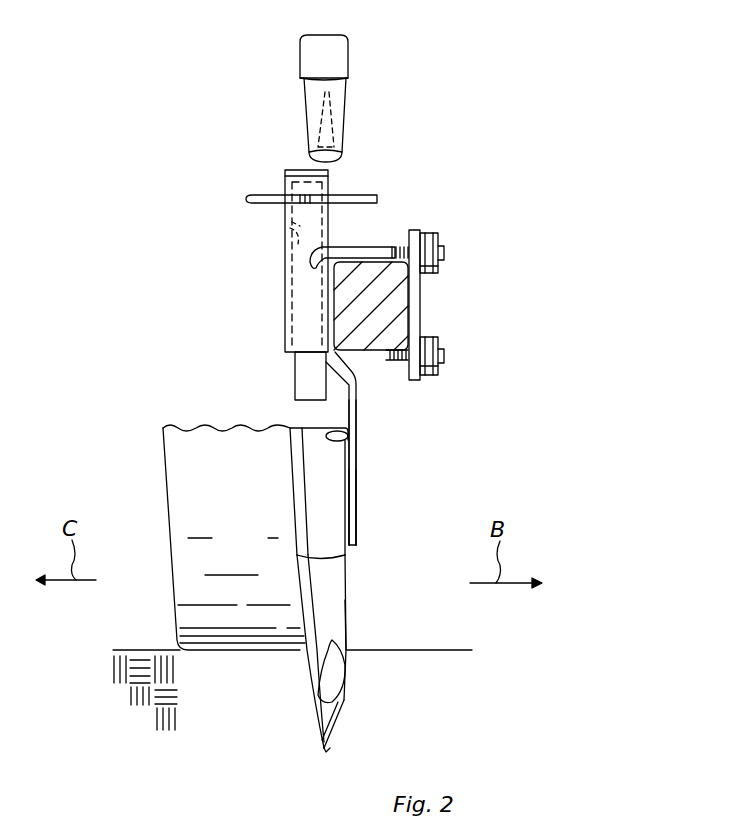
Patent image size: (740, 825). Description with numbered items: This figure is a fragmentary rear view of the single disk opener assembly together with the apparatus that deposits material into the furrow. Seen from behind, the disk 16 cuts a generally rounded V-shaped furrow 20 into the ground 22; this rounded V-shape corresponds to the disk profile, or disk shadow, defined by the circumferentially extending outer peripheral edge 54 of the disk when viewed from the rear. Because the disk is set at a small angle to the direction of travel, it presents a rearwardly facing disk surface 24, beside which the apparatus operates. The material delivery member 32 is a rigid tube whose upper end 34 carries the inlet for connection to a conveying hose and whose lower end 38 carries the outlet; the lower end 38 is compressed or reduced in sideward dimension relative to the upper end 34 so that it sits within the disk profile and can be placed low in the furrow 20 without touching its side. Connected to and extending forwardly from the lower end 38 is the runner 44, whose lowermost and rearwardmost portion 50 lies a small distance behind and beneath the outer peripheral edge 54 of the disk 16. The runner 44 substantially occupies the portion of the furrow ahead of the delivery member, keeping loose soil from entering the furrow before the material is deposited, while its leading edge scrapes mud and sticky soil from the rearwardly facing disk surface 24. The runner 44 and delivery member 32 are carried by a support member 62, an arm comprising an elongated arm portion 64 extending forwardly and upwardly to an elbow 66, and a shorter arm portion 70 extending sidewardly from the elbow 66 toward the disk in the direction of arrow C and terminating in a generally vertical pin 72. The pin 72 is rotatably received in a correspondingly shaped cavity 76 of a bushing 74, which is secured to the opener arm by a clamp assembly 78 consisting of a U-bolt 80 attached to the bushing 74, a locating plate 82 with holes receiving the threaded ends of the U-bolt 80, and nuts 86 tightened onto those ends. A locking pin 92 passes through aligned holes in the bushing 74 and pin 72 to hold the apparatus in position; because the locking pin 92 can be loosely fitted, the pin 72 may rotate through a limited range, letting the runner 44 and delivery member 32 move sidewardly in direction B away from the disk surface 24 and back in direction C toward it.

The disk 16 is at (298, 485).
The furrow 20 is at (347, 615).
The ground 22 is at (143, 650).
The rearwardly facing disk surface 24 is at (348, 547).
The material delivery member 32 is at (300, 424).
The upper end 34 is at (348, 54).
The lower end 38 is at (348, 628).
The runner 44 is at (313, 727).
The lowermost and rearwardmost portion 50 is at (325, 740).
The outer peripheral edge 54 is at (312, 687).
The support member 62 is at (366, 431).
The elongated arm portion 64 is at (357, 487).
The elbow 66 is at (357, 376).
The shorter arm portion 70 is at (337, 368).
The pin 72 is at (295, 364).
The bushing 74 is at (285, 290).
The cavity 76 is at (283, 228).
The clamp assembly 78 is at (365, 238).
The U-bolt 80 is at (445, 253).
The locating plate 82 is at (420, 232).
The nuts 86 is at (440, 273).
The locking pin 92 is at (378, 196).